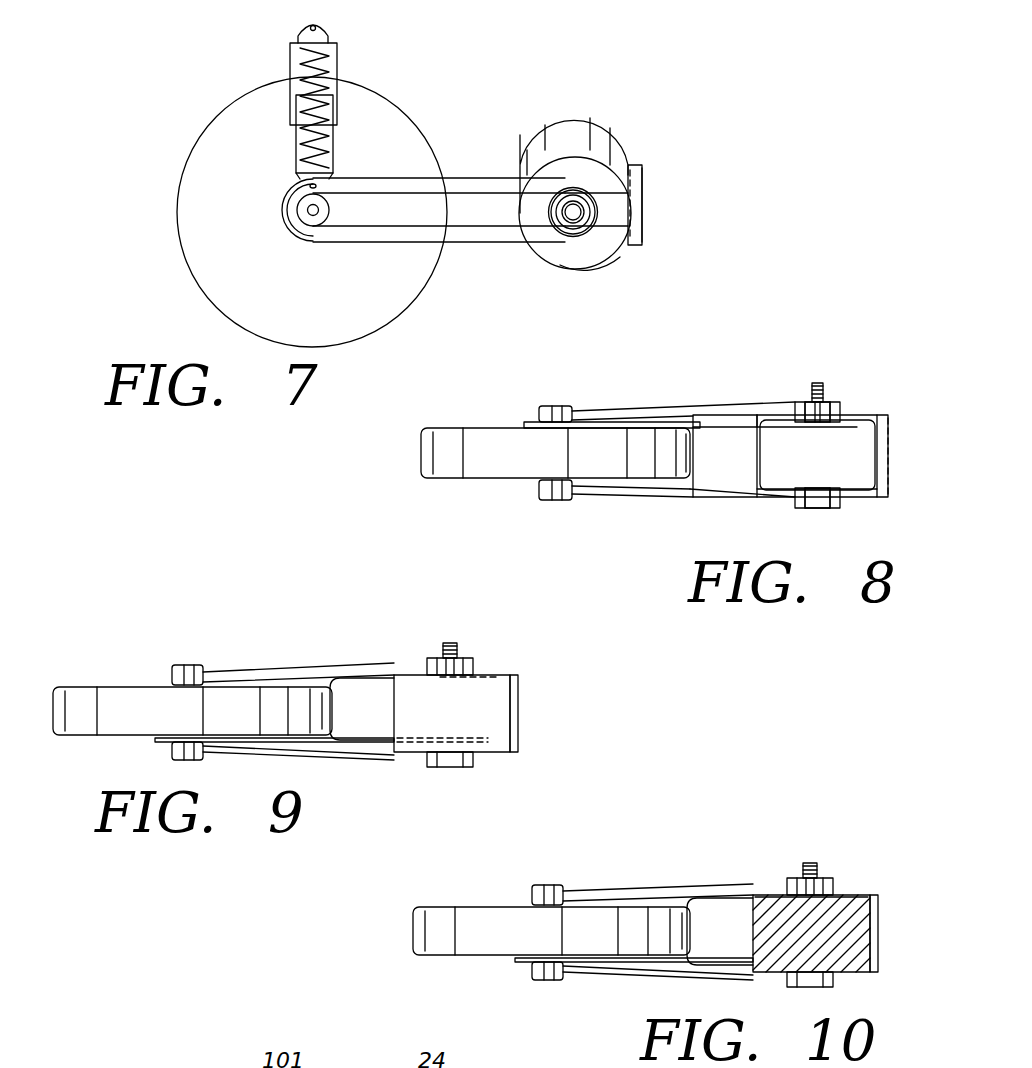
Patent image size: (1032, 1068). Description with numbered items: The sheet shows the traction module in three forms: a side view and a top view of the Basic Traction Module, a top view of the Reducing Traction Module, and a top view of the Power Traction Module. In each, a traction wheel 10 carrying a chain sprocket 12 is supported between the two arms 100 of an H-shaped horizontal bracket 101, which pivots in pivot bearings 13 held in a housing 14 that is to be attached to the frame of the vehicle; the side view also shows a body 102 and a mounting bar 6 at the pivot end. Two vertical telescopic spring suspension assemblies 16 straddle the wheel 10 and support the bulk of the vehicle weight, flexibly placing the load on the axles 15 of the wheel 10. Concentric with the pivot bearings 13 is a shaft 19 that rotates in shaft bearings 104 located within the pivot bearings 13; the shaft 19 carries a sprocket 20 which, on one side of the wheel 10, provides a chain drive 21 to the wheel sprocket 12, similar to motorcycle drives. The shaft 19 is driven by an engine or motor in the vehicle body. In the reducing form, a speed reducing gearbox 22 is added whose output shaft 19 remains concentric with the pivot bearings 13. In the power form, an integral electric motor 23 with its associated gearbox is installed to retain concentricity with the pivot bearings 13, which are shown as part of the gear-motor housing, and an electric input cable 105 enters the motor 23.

In FIG. 7, the mounting bar 6 is at (643, 174).
In FIG. 9, the mounting bar 6 is at (518, 730).
In FIG. 10, the mounting bar 6 is at (878, 948).
In FIG. 7, the traction wheel 10 is at (238, 104).
In FIG. 8, the traction wheel 10 is at (458, 430).
In FIG. 9, the traction wheel 10 is at (88, 689).
In FIG. 10, the traction wheel 10 is at (451, 909).
In FIG. 7, the chain sprocket 12 is at (468, 224).
In FIG. 8, the chain sprocket 12 is at (724, 423).
In FIG. 9, the chain sprocket 12 is at (362, 748).
In FIG. 10, the chain sprocket 12 is at (724, 968).
In FIG. 7, the pivot bearings 13 is at (565, 184).
In FIG. 8, the pivot bearings 13 is at (838, 402).
In FIG. 9, the pivot bearings 13 is at (473, 660).
In FIG. 10, the pivot bearings 13 is at (810, 932).
In FIG. 7, the housing 14 is at (642, 206).
In FIG. 8, the housing 14 is at (883, 414).
In FIG. 7, the axles 15 is at (304, 204).
In FIG. 8, the axles 15 is at (556, 406).
In FIG. 9, the axles 15 is at (185, 665).
In FIG. 10, the axles 15 is at (545, 885).
In FIG. 7, the vertical telescopic spring suspension assemblies 16 is at (290, 52).
In FIG. 7, the shaft 19 is at (581, 221).
In FIG. 8, the shaft 19 is at (815, 383).
In FIG. 9, the shaft 19 is at (448, 643).
In FIG. 10, the shaft 19 is at (810, 879).
In FIG. 7, the sprocket 20 is at (583, 182).
In FIG. 8, the sprocket 20 is at (852, 425).
In FIG. 7, the chain drive 21 is at (488, 178).
In FIG. 7, the speed reducing gearbox 22 is at (623, 259).
In FIG. 9, the speed reducing gearbox 22 is at (500, 686).
In FIG. 7, the electric motor 23 is at (572, 115).
In FIG. 10, the electric motor 23 is at (863, 903).
In FIG. 8, the arms 100 is at (658, 414).
In FIG. 8, the H-shaped horizontal bracket 101 is at (688, 402).
In FIG. 9, the H-shaped horizontal bracket 101 is at (318, 662).
In FIG. 10, the H-shaped horizontal bracket 101 is at (680, 886).
In FIG. 8, the body 102 is at (728, 480).
In FIG. 7, the shaft bearings 104 is at (568, 217).
In FIG. 8, the shaft bearings 104 is at (805, 402).
In FIG. 10, the electric input cable 105 is at (860, 874).